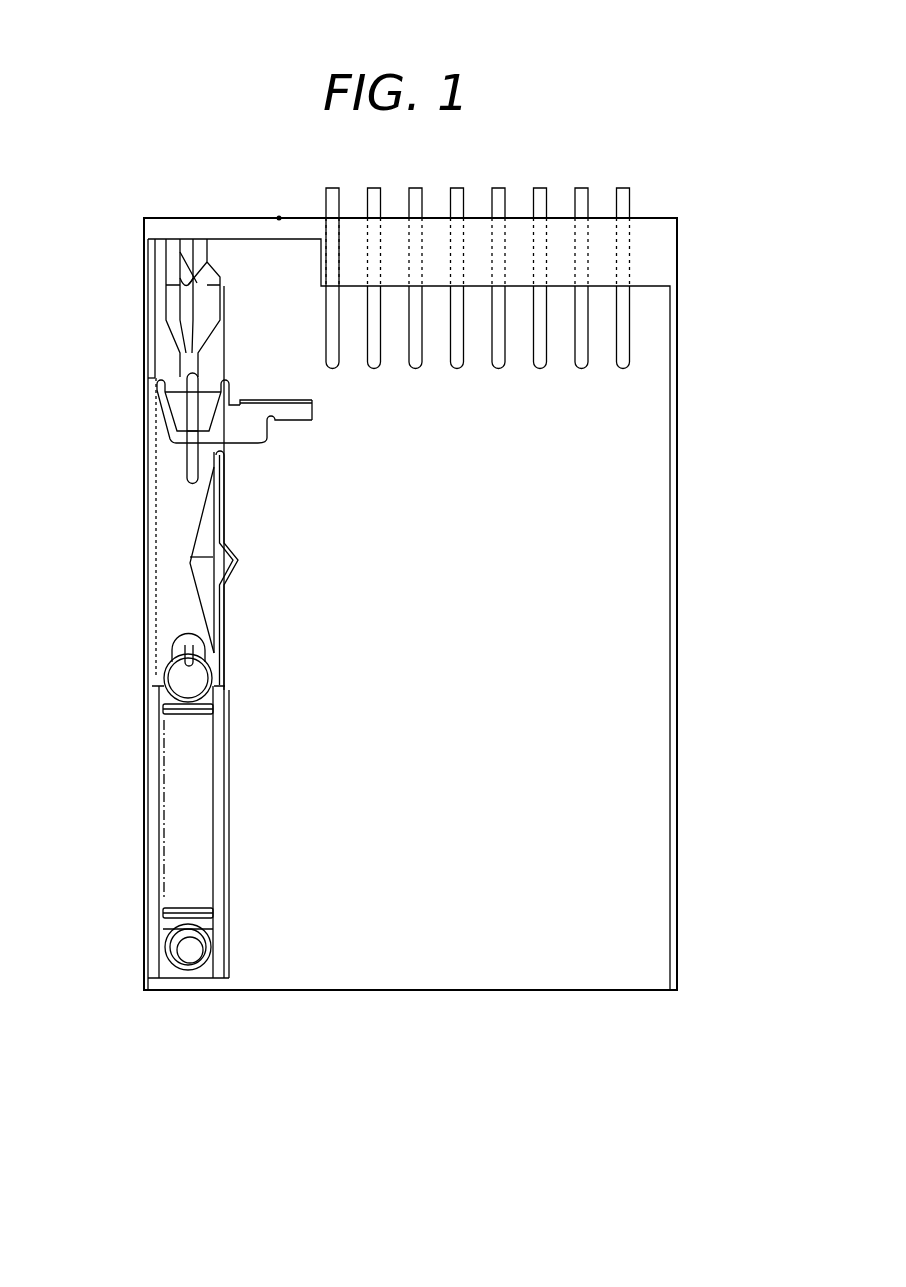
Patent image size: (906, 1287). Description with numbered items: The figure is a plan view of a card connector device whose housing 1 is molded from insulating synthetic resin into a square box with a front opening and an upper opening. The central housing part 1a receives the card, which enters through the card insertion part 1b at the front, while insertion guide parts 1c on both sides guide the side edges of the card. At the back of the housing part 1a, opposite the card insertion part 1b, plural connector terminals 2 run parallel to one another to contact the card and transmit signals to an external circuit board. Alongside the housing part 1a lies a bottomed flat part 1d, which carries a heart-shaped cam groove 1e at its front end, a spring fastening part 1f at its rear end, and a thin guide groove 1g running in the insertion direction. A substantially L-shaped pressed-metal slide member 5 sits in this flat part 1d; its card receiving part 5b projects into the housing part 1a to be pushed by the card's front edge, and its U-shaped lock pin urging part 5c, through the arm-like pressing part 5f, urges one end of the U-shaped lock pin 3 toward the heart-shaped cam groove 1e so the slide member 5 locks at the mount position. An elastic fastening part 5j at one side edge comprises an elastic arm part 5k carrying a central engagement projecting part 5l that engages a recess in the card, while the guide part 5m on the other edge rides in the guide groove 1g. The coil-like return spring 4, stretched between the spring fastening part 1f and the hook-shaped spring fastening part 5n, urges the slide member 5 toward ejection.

The housing 1 is at (688, 252).
The housing part 1a is at (627, 618).
The card insertion part 1b is at (405, 992).
The insertion guide parts 1c is at (230, 803).
The flat part 1d is at (156, 365).
The heart-shaped cam groove 1e is at (155, 303).
The spring fastening part 1f is at (183, 946).
The guide groove 1g is at (152, 258).
The connector terminals 2 is at (540, 198).
The lock pin 3 is at (188, 468).
The return spring 4 is at (173, 812).
The slide member 5 is at (166, 522).
The card receiving part 5b is at (312, 402).
The lock pin urging part 5c is at (152, 400).
The pressing part 5f is at (153, 428).
The elastic fastening part 5j is at (366, 470).
The elastic arm part 5k is at (227, 513).
The engagement projecting part 5l is at (240, 558).
The guide part 5m is at (150, 623).
The spring fastening part 5n is at (166, 680).